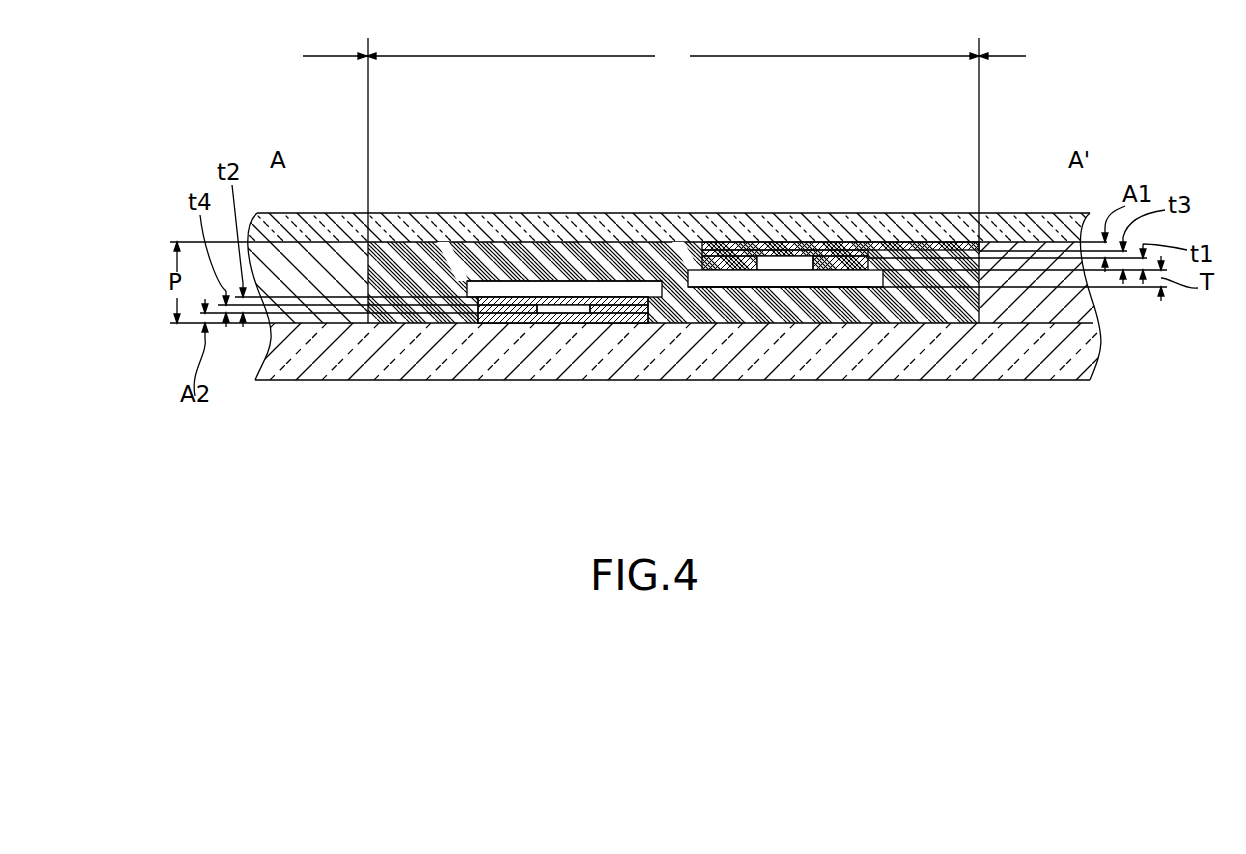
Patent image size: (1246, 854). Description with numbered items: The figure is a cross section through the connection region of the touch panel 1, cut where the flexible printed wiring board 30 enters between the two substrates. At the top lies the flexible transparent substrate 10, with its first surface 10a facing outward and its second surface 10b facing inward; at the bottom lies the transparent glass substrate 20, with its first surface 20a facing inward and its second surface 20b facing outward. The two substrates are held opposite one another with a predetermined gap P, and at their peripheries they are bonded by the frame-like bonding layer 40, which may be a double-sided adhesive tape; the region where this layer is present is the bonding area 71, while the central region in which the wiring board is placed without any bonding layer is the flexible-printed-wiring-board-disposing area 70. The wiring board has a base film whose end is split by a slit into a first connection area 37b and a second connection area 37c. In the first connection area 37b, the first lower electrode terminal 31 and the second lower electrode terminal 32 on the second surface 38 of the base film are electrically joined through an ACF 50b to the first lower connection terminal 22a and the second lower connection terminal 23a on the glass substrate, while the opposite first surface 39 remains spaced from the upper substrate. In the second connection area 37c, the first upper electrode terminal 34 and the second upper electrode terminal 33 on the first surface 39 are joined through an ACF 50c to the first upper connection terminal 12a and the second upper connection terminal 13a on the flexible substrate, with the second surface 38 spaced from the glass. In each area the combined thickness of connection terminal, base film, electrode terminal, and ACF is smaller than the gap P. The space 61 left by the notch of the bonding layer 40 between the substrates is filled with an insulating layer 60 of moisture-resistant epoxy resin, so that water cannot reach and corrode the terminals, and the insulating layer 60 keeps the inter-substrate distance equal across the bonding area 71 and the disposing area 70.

The touch panel 1 is at (1110, 94).
The flexible transparent substrate 10 is at (1003, 230).
The first surface 10a is at (933, 240).
The second surface 10b is at (327, 240).
The first upper connection terminal 12a is at (848, 268).
The second upper connection terminal 13a is at (738, 252).
The transparent glass substrate 20 is at (1080, 352).
The first surface 20a is at (1078, 320).
The second surface 20b is at (1045, 383).
The first lower connection terminal 22a is at (512, 318).
The second lower connection terminal 23a is at (627, 322).
The flexible printed wiring board 30 is at (437, 330).
The first lower electrode terminal 31 is at (507, 279).
The second lower electrode terminal 32 is at (618, 280).
The second upper electrode terminal 33 is at (724, 285).
The first upper electrode terminal 34 is at (840, 288).
The first connection area 37b is at (442, 262).
The second connection area 37c is at (680, 262).
The second surface 38 is at (592, 318).
The first surface 39 is at (550, 275).
The bonding layer 40 is at (322, 328).
The ACF 50b is at (563, 318).
The ACF 50c is at (788, 246).
The insulating layer 60 is at (946, 290).
The space 61 is at (897, 308).
The flexible-printed-wiring-board-disposing area 70 is at (673, 55).
The bonding area 71 is at (665, 55).